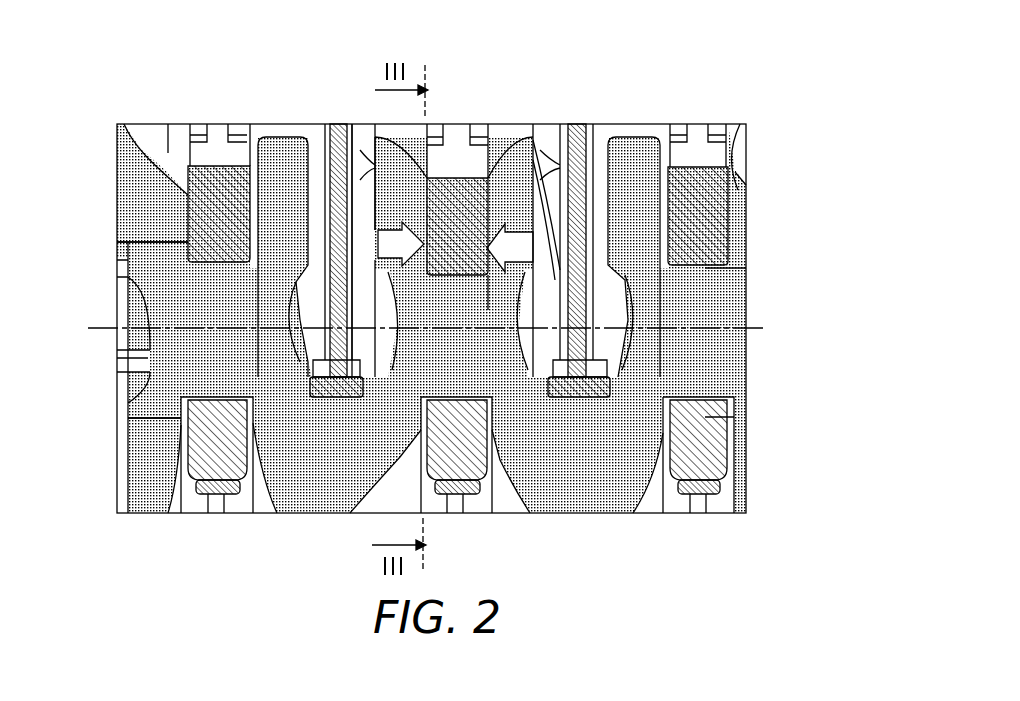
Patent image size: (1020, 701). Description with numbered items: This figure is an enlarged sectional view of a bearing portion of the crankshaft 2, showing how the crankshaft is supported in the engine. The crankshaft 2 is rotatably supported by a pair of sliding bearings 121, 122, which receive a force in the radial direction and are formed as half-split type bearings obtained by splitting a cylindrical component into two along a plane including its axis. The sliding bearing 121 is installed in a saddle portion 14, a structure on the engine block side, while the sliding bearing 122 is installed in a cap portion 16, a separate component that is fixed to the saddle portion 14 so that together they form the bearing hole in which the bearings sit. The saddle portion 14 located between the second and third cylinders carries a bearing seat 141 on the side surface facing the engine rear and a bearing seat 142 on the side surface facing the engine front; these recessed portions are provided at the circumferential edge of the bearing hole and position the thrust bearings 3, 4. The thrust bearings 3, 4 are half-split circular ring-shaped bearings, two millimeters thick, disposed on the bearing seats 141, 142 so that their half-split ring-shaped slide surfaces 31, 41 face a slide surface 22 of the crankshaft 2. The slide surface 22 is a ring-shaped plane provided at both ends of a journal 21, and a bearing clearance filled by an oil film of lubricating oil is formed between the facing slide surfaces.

The crankshaft 2 is at (740, 350).
The journal 21 is at (220, 383).
The slide surface 22 is at (327, 125).
The sliding bearing 121 is at (117, 242).
The sliding bearing 122 is at (117, 420).
The saddle portion 14 is at (223, 127).
The bearing seat 141 is at (565, 125).
The bearing seat 142 is at (347, 125).
The cap portion 16 is at (218, 494).
The thrust bearing 3 is at (508, 125).
The slide surface 31 is at (533, 125).
The thrust bearing 4 is at (450, 125).
The slide surface 41 is at (377, 125).